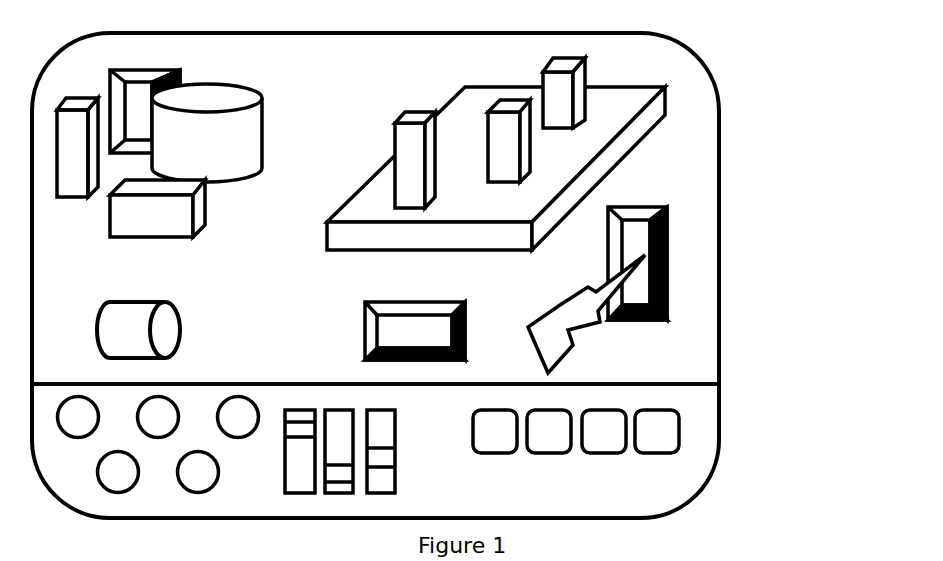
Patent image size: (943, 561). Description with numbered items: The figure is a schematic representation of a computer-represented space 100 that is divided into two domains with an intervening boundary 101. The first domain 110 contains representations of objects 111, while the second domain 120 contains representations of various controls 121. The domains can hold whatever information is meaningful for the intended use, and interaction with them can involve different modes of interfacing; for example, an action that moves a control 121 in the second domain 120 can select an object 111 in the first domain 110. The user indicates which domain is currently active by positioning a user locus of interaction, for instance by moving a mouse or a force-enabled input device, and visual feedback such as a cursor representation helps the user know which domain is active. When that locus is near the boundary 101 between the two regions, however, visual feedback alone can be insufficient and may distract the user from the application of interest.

The computer-represented space 100 is at (752, 137).
The boundary 101 is at (675, 383).
The first domain 110 is at (471, 215).
The objects 111 is at (667, 262).
The second domain 120 is at (465, 458).
The controls 121 is at (558, 453).